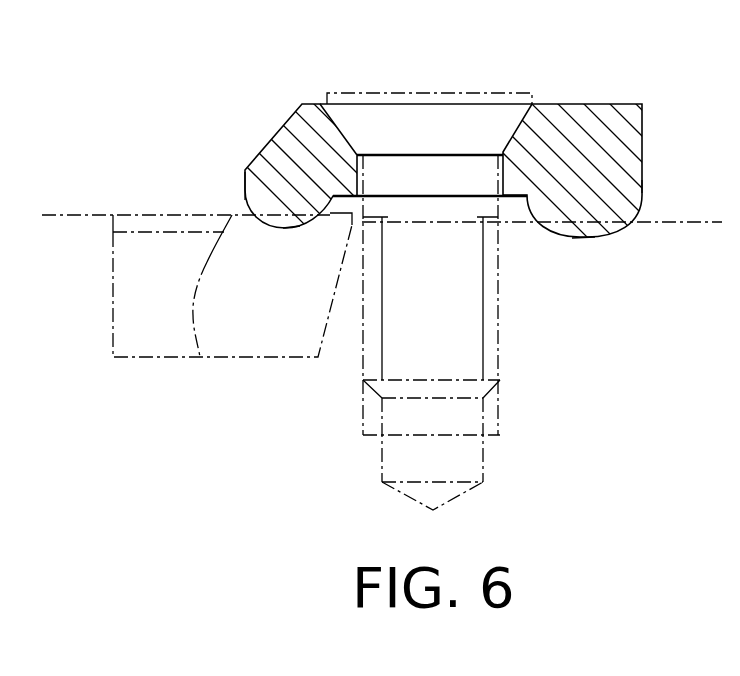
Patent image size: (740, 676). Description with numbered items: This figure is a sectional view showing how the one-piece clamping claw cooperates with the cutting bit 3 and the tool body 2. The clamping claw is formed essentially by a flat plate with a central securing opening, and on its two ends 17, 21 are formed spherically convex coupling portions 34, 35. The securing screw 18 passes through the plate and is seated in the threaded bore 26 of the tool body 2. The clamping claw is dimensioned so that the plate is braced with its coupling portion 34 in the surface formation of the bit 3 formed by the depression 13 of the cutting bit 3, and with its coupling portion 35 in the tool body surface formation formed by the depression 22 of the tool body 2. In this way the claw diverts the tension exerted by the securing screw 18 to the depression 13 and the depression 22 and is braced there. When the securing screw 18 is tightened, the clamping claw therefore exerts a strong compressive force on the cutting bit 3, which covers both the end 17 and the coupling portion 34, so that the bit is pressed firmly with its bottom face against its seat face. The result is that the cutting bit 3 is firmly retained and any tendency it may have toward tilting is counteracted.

The tool body 2 is at (662, 297).
The cutting bit 3 is at (287, 347).
The depression 13 is at (297, 228).
The end 17 is at (275, 130).
The securing screw 18 is at (420, 90).
The end 21 is at (626, 91).
The depression 22 is at (582, 238).
The threaded bore 26 is at (491, 467).
The coupling portion 34 is at (243, 208).
The coupling portion 35 is at (637, 207).